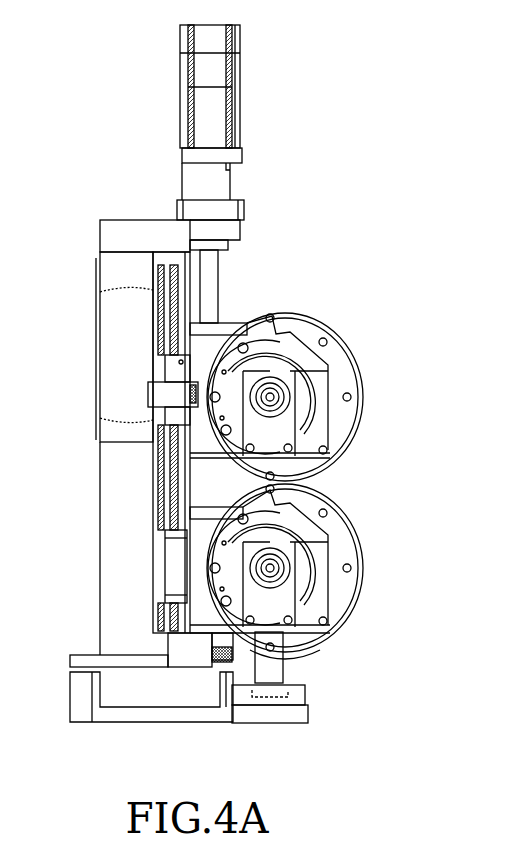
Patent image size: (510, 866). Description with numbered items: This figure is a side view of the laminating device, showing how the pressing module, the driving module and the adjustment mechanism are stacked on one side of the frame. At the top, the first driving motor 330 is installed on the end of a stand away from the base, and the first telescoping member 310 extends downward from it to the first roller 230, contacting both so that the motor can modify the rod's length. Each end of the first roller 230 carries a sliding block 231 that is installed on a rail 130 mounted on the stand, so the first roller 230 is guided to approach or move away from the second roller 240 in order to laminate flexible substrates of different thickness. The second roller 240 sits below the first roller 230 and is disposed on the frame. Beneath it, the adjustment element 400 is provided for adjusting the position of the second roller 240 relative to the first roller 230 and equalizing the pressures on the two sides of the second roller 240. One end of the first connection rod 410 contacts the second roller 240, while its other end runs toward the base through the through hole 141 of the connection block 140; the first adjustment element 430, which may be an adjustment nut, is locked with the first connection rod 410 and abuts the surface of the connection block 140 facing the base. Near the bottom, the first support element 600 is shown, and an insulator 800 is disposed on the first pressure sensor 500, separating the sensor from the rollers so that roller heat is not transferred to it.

The first driving motor 330 is at (222, 72).
The first telescoping member 310 is at (218, 283).
The first roller 230 is at (349, 360).
The second roller 240 is at (349, 530).
The rail 130 is at (158, 293).
The sliding block 231 is at (157, 367).
The first connection rod 410 is at (160, 614).
The first support element 600 is at (287, 660).
The first adjustment element 430 is at (270, 670).
The insulator 800 is at (305, 693).
The first pressure sensor 500 is at (278, 708).
The connection block 140 is at (187, 657).
The through hole 141 is at (200, 660).
The adjustment element 400 is at (215, 672).